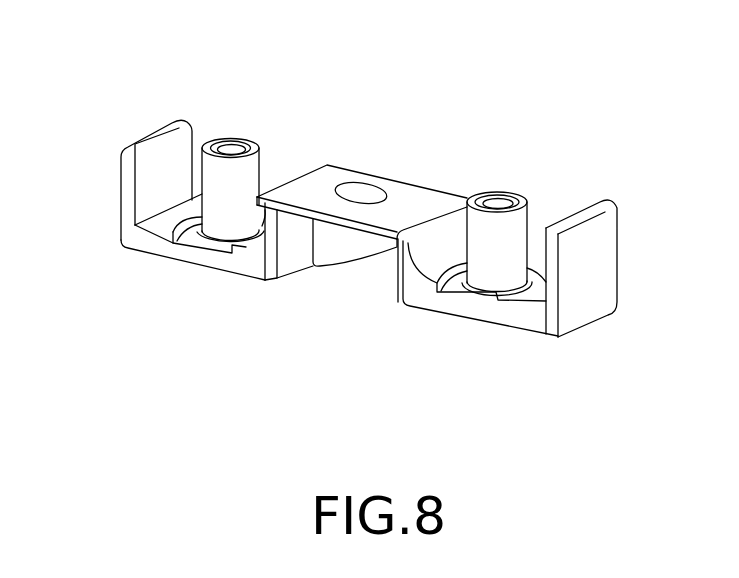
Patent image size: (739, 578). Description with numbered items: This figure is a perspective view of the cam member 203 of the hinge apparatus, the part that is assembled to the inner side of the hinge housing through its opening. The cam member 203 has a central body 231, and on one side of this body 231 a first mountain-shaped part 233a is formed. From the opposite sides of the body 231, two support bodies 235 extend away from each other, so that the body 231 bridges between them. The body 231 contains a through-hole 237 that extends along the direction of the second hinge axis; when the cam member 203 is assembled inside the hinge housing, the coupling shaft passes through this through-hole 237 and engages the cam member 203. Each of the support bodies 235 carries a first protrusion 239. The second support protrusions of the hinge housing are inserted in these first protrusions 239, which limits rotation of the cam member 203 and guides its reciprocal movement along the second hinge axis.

The cam member 203 is at (111, 54).
The body 231 is at (362, 154).
The first mountain-shaped part 233a is at (342, 248).
The support bodies 235 is at (153, 240).
The through-hole 237 is at (362, 190).
The first protrusions 239 is at (229, 147).